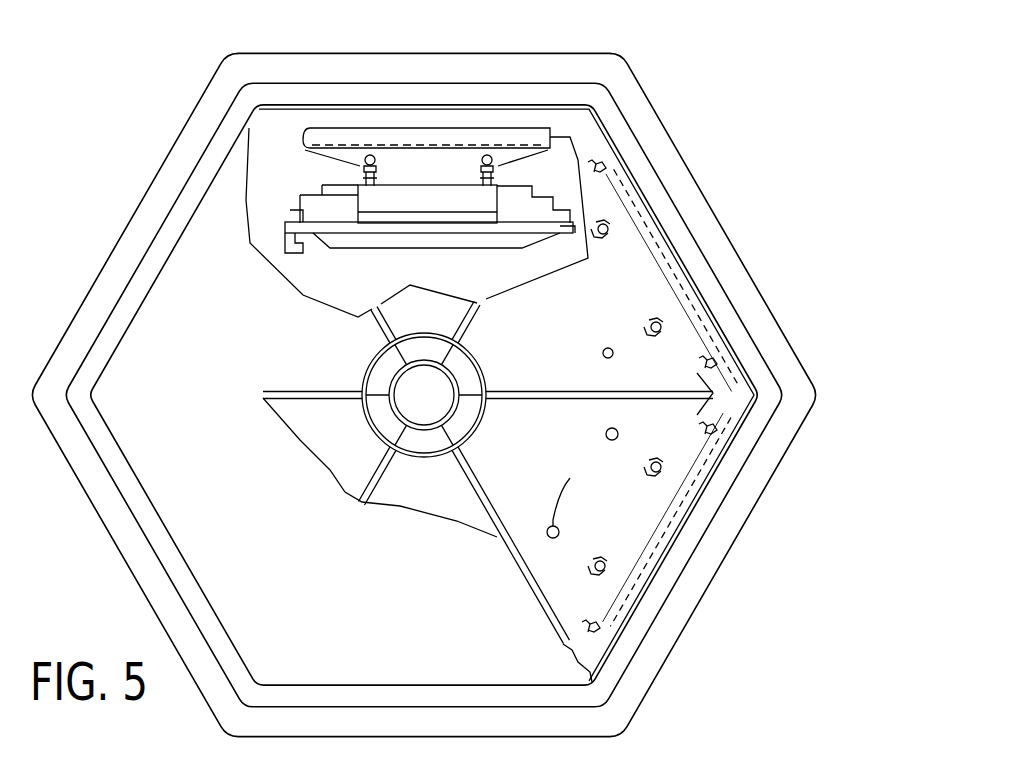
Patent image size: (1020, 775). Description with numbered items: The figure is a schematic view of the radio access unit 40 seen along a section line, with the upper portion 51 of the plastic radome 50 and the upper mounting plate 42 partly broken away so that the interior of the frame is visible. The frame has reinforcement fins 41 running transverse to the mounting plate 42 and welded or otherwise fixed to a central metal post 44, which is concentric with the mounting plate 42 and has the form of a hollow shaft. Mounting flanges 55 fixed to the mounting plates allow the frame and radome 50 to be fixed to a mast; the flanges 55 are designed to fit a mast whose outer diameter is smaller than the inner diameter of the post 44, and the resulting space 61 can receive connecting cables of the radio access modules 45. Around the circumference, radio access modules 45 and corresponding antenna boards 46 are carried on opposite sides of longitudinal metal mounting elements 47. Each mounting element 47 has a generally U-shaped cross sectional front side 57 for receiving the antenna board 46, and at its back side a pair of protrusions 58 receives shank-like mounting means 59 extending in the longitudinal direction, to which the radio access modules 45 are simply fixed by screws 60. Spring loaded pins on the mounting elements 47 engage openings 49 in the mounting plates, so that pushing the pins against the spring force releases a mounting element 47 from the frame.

The radio access unit 40 is at (722, 600).
The reinforcement fins 41 is at (548, 389).
The upper mounting plate 42 is at (329, 359).
The post 44 is at (505, 340).
The radio access modules 45 is at (322, 210).
The antenna boards 46 is at (528, 128).
The mounting element 47 is at (652, 287).
The openings 49 is at (603, 352).
The radome 50 is at (110, 257).
The upper portion of the radome 51 is at (269, 556).
The mounting flanges 55 is at (370, 426).
The U-shaped front side 57 is at (706, 365).
The back side protrusions 58 is at (658, 343).
The mounting means 59 is at (650, 328).
The screws 60 is at (494, 163).
The space 61 is at (412, 437).